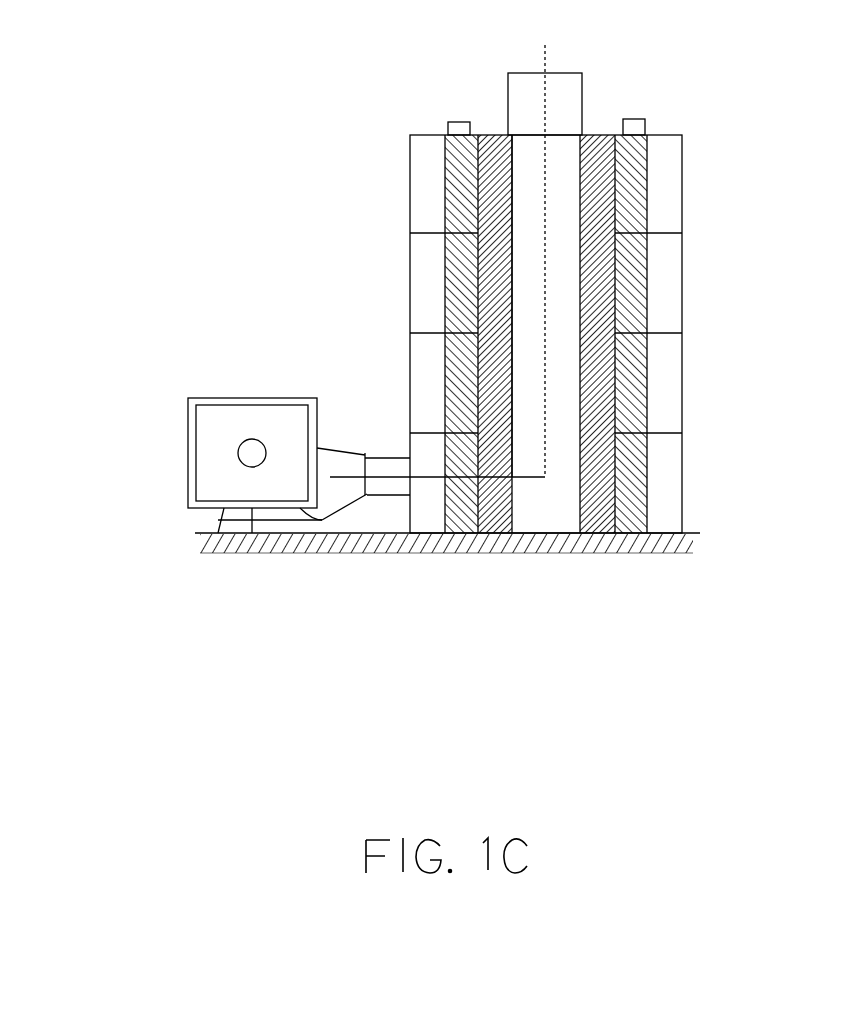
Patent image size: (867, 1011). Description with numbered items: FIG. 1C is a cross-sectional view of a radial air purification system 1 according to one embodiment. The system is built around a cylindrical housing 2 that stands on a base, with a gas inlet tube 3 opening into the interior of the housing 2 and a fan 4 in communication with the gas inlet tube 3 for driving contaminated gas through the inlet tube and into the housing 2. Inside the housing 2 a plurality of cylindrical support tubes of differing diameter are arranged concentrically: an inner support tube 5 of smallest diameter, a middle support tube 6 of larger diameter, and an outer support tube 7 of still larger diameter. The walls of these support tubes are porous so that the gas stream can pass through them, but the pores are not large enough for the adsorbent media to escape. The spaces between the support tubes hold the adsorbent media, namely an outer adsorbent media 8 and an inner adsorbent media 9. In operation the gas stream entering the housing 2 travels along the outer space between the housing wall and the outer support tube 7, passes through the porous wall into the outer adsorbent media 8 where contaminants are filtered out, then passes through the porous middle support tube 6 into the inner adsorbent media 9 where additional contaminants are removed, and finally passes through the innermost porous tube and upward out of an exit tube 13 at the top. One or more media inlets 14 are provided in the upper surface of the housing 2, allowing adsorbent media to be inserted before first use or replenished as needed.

The radial air purification system 1 is at (408, 416).
The cylindrical housing 2 is at (689, 243).
The gas inlet tube 3 is at (380, 509).
The fan 4 is at (244, 410).
The inner support tube 5 is at (433, 261).
The middle support tube 6 is at (362, 334).
The outer support tube 7 is at (431, 188).
The outer adsorbent media 8 is at (604, 523).
The inner adsorbent media 9 is at (634, 519).
The exit tube 13 is at (601, 85).
The media inlets 14 is at (453, 97).